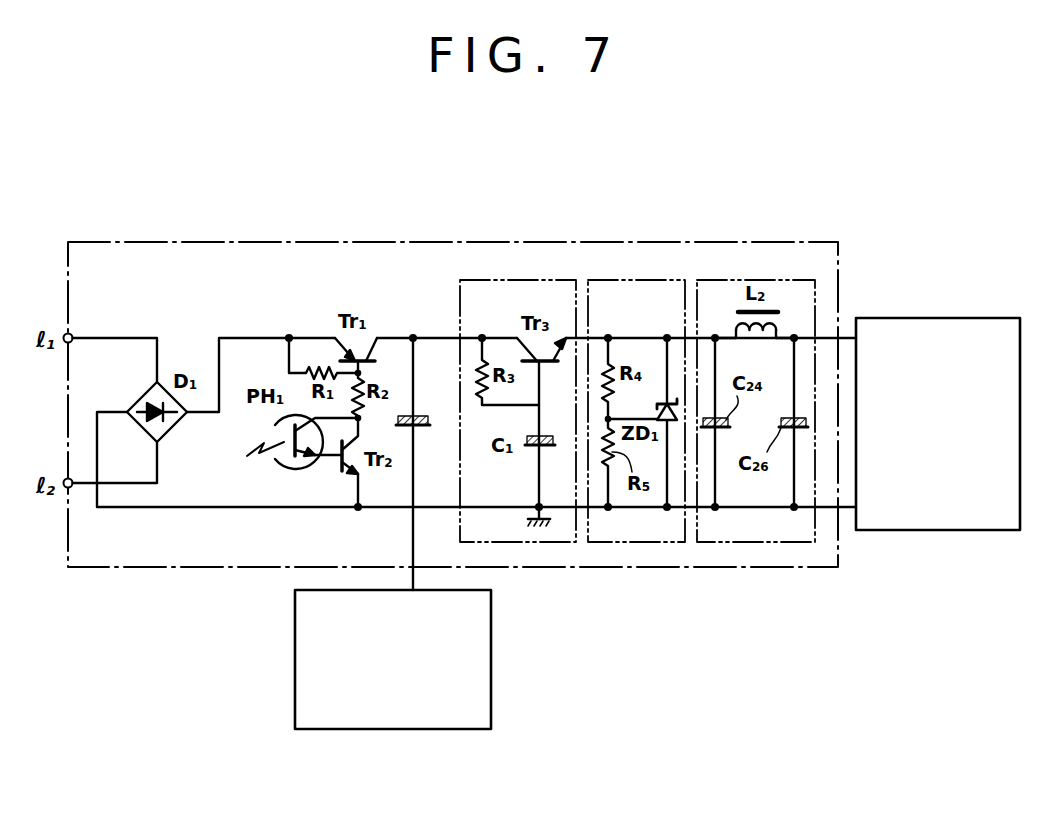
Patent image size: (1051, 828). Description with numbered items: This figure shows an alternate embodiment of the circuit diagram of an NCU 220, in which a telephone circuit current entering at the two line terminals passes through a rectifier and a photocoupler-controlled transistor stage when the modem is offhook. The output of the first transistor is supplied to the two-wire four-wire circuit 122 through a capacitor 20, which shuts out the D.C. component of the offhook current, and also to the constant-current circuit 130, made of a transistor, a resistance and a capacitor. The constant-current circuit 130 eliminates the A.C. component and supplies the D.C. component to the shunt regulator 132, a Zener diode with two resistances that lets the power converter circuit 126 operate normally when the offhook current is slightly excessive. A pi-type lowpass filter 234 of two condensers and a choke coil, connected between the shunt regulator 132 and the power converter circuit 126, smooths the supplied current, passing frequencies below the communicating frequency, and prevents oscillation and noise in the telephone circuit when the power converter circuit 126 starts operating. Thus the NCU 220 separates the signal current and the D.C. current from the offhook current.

The NCU 220 is at (304, 241).
The constant-current circuit 130 is at (538, 280).
The shunt regulator 132 is at (662, 280).
The lowpass filter 234 is at (782, 280).
The power converter circuit 126 is at (921, 318).
The two-wire four-wire circuit 122 is at (491, 658).
The capacitor 20 is at (430, 423).